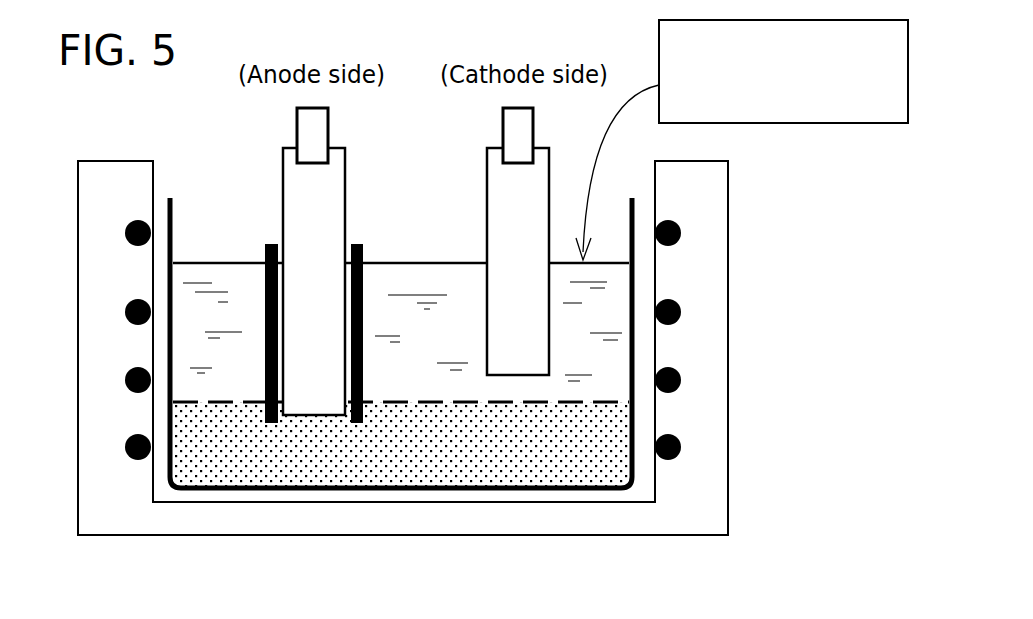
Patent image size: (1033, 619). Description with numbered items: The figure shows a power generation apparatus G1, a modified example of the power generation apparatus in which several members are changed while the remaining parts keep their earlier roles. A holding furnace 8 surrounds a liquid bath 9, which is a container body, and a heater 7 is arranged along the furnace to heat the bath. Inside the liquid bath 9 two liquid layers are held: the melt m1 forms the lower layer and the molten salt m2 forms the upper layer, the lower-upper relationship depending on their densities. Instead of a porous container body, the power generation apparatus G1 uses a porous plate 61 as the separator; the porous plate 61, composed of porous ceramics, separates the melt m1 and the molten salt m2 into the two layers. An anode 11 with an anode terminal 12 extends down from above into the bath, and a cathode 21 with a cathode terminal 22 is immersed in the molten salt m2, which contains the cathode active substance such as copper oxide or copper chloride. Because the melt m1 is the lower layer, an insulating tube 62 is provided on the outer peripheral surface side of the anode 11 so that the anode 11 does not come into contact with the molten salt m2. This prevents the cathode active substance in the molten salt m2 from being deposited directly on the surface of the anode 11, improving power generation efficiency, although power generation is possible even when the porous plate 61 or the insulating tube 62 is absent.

The heater 7 is at (681, 375).
The holding furnace 8 is at (715, 428).
The liquid bath 9 is at (625, 488).
The anode 11 is at (283, 208).
The anode terminal 12 is at (296, 134).
The cathode 21 is at (487, 208).
The cathode terminal 22 is at (502, 134).
The porous plate 61 is at (200, 403).
The insulating tube 62 is at (265, 352).
The melt m1 is at (328, 470).
The molten salt m2 is at (523, 387).
The power generation apparatus G1 is at (735, 553).